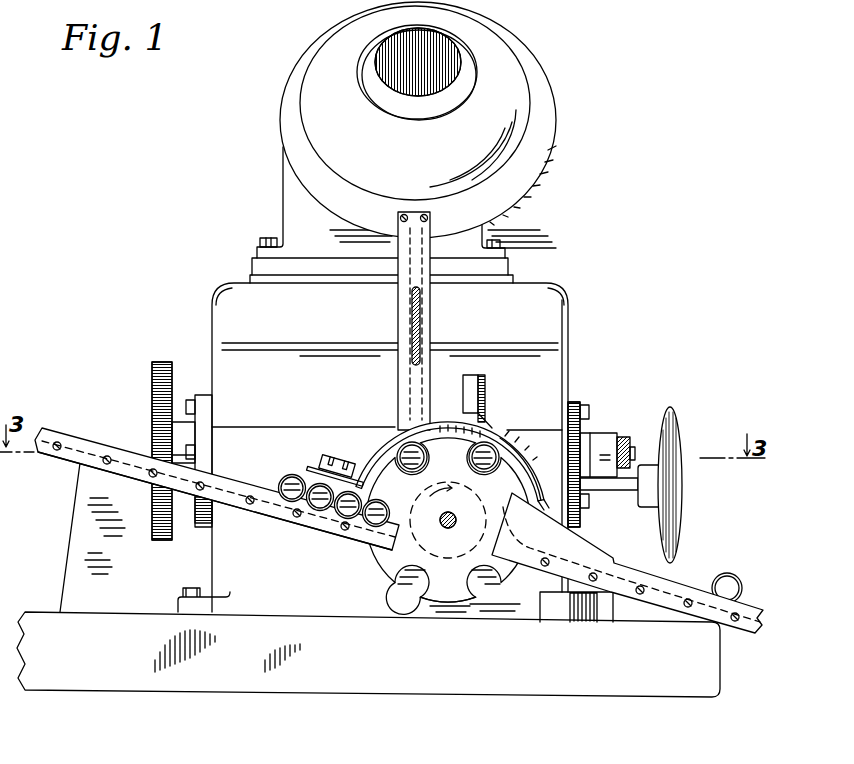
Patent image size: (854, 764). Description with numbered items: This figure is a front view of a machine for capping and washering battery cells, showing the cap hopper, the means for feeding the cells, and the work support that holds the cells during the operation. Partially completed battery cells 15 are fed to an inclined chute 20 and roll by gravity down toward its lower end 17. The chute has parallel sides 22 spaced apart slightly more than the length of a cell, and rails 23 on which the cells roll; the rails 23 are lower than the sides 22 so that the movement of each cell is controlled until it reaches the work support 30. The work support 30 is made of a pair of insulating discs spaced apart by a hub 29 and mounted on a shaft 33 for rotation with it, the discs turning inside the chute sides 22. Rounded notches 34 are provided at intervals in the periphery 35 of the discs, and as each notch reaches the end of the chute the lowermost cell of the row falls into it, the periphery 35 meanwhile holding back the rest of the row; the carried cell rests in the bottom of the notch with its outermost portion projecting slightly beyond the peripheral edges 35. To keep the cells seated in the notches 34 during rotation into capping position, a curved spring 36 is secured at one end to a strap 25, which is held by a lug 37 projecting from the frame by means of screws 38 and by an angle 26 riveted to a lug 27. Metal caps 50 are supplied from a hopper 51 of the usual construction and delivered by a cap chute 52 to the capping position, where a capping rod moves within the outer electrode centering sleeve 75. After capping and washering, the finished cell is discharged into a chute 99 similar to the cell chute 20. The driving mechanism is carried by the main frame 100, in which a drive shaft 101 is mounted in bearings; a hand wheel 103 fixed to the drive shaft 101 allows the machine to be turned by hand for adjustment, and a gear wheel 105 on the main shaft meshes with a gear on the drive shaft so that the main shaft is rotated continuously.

The partially completed battery cell 15 is at (285, 480).
The lower end of the chute 17 is at (388, 540).
The inclined chute 20 is at (264, 524).
The parallel sides of the chute 22 is at (237, 490).
The rails 23 is at (223, 506).
The strap 25 is at (513, 462).
The angle 26 is at (486, 414).
The lug 27 is at (472, 378).
The hub 29 is at (476, 505).
The work support 30 is at (448, 525).
The shaft 33 is at (446, 524).
The notches 34 is at (388, 578).
The periphery of the discs 35 is at (425, 604).
The curved spring 36 is at (541, 490).
The lug 37 is at (348, 463).
The screws 38 is at (320, 466).
The metal caps 50 is at (421, 340).
The hopper 51 is at (418, 120).
The cap chute 52 is at (398, 316).
The electrode centering sleeve 75 is at (396, 430).
The discharge chute 99 is at (680, 585).
The main frame 100 is at (560, 374).
The drive shaft 101 is at (618, 500).
The hand wheel 103 is at (678, 503).
The gear wheel 105 is at (163, 362).